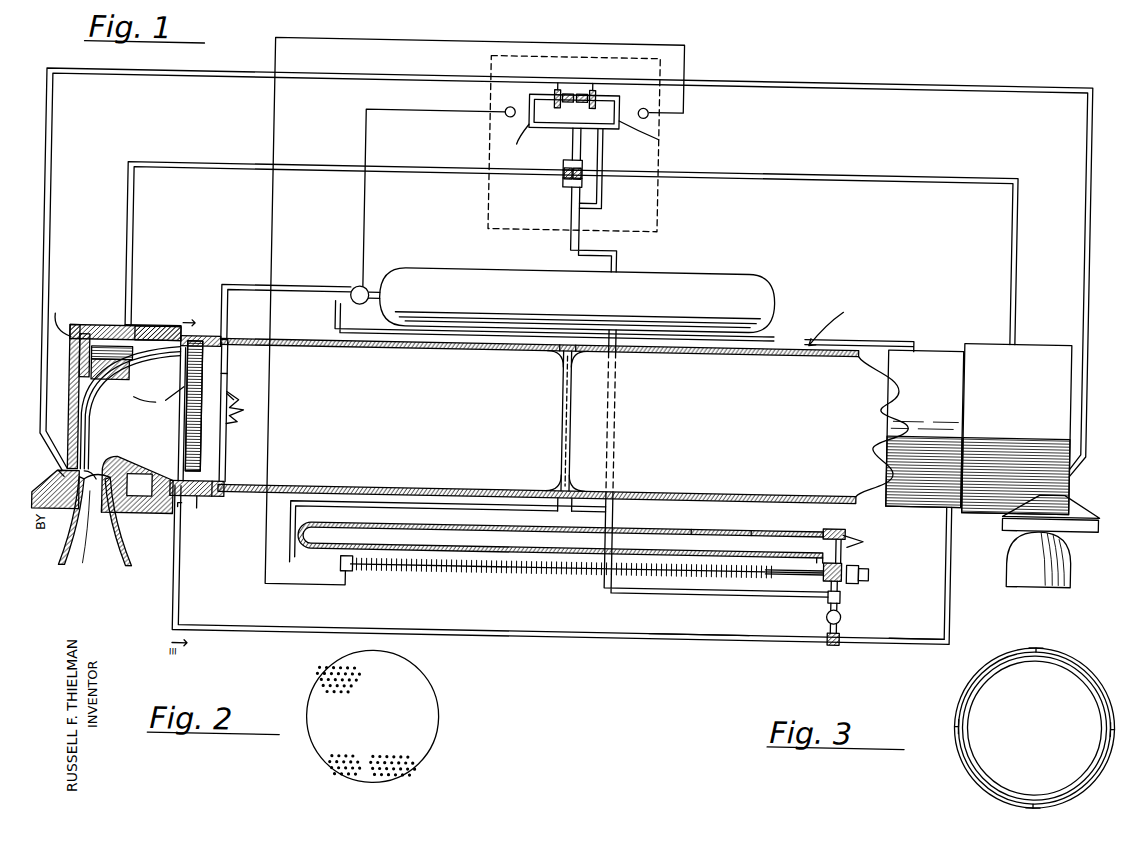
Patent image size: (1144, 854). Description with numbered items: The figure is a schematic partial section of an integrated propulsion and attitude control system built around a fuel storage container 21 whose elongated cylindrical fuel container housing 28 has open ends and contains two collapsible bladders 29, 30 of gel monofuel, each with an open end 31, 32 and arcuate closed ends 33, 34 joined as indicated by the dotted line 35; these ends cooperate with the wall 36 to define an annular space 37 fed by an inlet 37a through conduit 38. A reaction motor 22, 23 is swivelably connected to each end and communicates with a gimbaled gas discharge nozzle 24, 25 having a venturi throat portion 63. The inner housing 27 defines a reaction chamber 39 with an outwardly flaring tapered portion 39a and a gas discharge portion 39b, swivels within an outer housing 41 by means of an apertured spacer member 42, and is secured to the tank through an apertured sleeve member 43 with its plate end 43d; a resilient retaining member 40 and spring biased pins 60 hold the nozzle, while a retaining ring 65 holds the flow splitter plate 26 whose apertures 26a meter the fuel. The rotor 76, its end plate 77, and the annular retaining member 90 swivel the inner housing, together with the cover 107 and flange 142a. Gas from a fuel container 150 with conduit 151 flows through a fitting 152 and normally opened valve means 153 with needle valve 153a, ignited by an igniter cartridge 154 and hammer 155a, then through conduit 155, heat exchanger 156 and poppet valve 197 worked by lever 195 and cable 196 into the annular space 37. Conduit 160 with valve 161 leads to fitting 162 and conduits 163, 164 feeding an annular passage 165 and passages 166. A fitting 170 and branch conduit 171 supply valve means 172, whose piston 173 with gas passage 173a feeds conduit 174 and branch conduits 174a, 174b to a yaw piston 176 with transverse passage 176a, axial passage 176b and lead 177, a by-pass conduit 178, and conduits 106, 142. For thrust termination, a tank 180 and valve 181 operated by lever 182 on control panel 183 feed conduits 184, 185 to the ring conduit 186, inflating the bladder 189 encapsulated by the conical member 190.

In FIG. 1, the fuel storage container 21 is at (831, 322).
In FIG. 1, the reaction motor 22 is at (95, 311).
In FIG. 1, the reaction motor 23 is at (1039, 321).
In FIG. 1, the gimbaled gas discharge nozzle 24 is at (69, 565).
In FIG. 1, the gimbaled gas discharge nozzle 25 is at (1032, 568).
In FIG. 1, the apertured flow splitter plate 26 is at (234, 340).
In FIG. 2, the apertured flow splitter plate 26 is at (370, 656).
In FIG. 1, the apertures 26a is at (161, 398).
In FIG. 2, the apertures 26a is at (345, 668).
In FIG. 1, the inner housing 27 is at (74, 400).
In FIG. 1, the fuel container housing 28 is at (842, 325).
In FIG. 1, the bladder 29 is at (318, 328).
In FIG. 1, the bladder 30 is at (785, 333).
In FIG. 1, the open end 31 is at (233, 380).
In FIG. 1, the open end 32 is at (898, 382).
In FIG. 1, the arcuate closed end 33 is at (576, 340).
In FIG. 1, the arcuate closed end 34 is at (580, 352).
In FIG. 1, the dotted line 35 is at (569, 413).
In FIG. 1, the wall 36 is at (581, 490).
In FIG. 1, the annular space 37 is at (565, 478).
In FIG. 1, the inlet 37a is at (580, 472).
In FIG. 1, the conduit 38 is at (566, 498).
In FIG. 1, the reaction chamber 39 is at (128, 407).
In FIG. 1, the outwardly flaring tapered portion 39a is at (185, 384).
In FIG. 1, the gas discharge portion 39b is at (96, 480).
In FIG. 1, the resilient retaining member 40 is at (50, 492).
In FIG. 1, the outer housing 41 is at (142, 330).
In FIG. 1, the apertured spacer member 42 is at (190, 345).
In FIG. 1, the apertured sleeve member 43 is at (205, 337).
In FIG. 3, the apertured sleeve member 43 is at (1086, 754).
In FIG. 1, the plate end 43d is at (230, 494).
In FIG. 1, the spring biased pins 60 is at (68, 471).
In FIG. 1, the venturi throat portion 63 is at (94, 470).
In FIG. 1, the retaining ring 65 is at (230, 336).
In FIG. 1, the rotor 76 is at (108, 345).
In FIG. 1, the end plate 77 is at (88, 333).
In FIG. 1, the annular retaining member 90 is at (61, 316).
In FIG. 1, the conduit 106 is at (130, 180).
In FIG. 1, the cover 107 is at (133, 323).
In FIG. 1, the conduit 142 is at (53, 112).
In FIG. 1, the casing flange 142a is at (135, 522).
In FIG. 1, the fuel container 150 is at (760, 517).
In FIG. 1, the conduit 151 is at (700, 517).
In FIG. 1, the fitting 152 is at (838, 516).
In FIG. 1, the normally opened valve means 153 is at (852, 554).
In FIG. 1, the needle valve 153a is at (878, 560).
In FIG. 1, the igniter cartridge 154 is at (858, 518).
In FIG. 1, the conduit 155 is at (307, 531).
In FIG. 1, the hammer 155a is at (872, 526).
In FIG. 1, the heat exchanger 156 is at (460, 564).
In FIG. 1, the conduit 160 is at (851, 582).
In FIG. 1, the manually actuatable valve 161 is at (852, 602).
In FIG. 1, the fitting 162 is at (841, 631).
In FIG. 1, the conduit 163 is at (700, 627).
In FIG. 1, the conduit 164 is at (930, 627).
In FIG. 1, the annular passage 165 is at (205, 506).
In FIG. 3, the annular passage 165 is at (1063, 641).
In FIG. 3, the passages 166 is at (1096, 656).
In FIG. 1, the fitting 170 is at (840, 590).
In FIG. 1, the branch conduit 171 is at (574, 228).
In FIG. 1, the valve means 172 is at (566, 170).
In FIG. 1, the piston 173 is at (584, 166).
In FIG. 1, the gas passage 173a is at (584, 156).
In FIG. 1, the conduit 174 is at (574, 135).
In FIG. 1, the branch conduit 174a is at (660, 128).
In FIG. 1, the branch conduit 174b is at (509, 139).
In FIG. 1, the piston 176 is at (600, 82).
In FIG. 1, the transverse passage 176a is at (595, 108).
In FIG. 1, the axial passage 176b is at (556, 107).
In FIG. 1, the switch lead 177 is at (596, 74).
In FIG. 1, the by-pass conduit 178 is at (604, 193).
In FIG. 1, the cylindrical tank 180 is at (705, 262).
In FIG. 1, the manually actuatable valve 181 is at (368, 280).
In FIG. 1, the lever 182 is at (506, 106).
In FIG. 1, the control panel 183 is at (491, 89).
In FIG. 1, the conduit 184 is at (310, 281).
In FIG. 1, the conduit 185 is at (340, 300).
In FIG. 1, the annular ring conduit 186 is at (182, 350).
In FIG. 1, the deflated bladder 189 is at (242, 396).
In FIG. 1, the thin conical member 190 is at (900, 400).
In FIG. 1, the lever 195 is at (650, 104).
In FIG. 1, the push-pull flexible cable 196 is at (275, 131).
In FIG. 1, the spring loaded poppet valve 197 is at (362, 566).